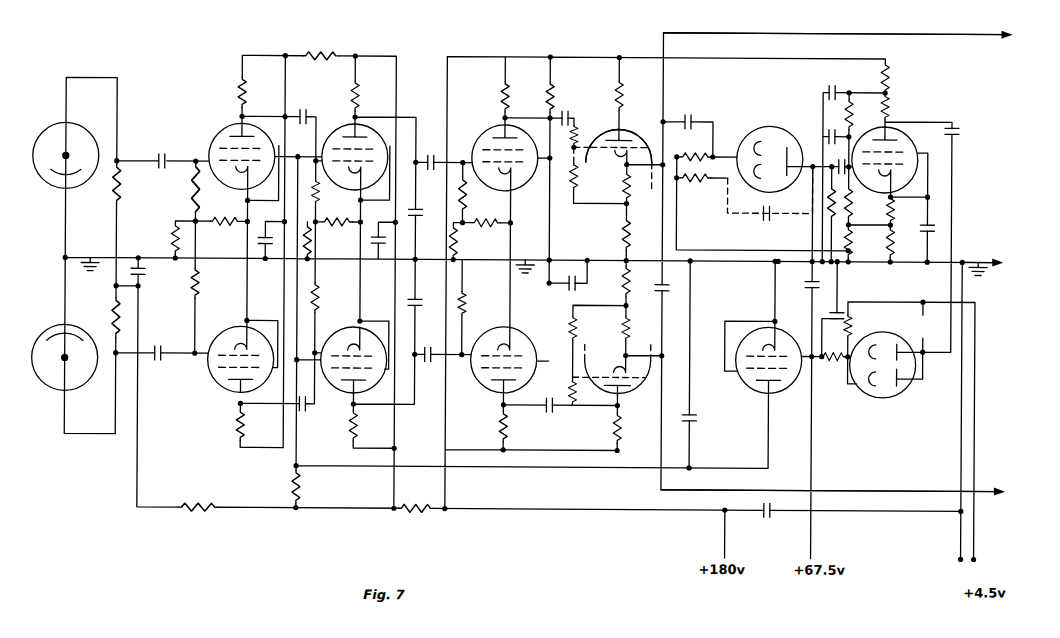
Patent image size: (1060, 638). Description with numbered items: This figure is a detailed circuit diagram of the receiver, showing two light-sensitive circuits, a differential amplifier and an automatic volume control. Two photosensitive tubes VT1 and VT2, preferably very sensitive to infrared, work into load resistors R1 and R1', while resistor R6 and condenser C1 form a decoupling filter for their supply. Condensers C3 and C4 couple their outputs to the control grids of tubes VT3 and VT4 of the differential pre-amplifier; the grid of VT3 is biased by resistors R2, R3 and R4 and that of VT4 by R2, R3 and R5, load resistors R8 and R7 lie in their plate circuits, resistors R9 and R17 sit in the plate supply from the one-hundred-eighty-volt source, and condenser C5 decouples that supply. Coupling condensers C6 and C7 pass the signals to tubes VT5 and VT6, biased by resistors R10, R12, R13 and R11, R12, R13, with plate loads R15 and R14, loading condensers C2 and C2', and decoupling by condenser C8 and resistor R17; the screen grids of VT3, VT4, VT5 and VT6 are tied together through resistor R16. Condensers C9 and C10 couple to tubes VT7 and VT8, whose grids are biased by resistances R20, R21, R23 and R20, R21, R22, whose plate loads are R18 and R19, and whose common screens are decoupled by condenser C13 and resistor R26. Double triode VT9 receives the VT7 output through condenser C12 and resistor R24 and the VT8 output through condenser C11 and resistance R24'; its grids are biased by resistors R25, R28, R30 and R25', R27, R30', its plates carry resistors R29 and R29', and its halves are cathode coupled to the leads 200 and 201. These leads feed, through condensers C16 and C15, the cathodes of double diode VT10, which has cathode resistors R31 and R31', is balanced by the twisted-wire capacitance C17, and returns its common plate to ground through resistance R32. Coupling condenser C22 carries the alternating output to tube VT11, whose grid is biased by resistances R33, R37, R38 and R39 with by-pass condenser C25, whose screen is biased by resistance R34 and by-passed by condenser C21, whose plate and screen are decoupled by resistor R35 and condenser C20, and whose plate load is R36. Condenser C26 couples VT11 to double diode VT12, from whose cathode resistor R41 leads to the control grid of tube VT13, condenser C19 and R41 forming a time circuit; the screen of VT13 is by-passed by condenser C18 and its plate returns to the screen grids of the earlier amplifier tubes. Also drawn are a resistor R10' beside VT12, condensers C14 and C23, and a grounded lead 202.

The photosensitive tube VT1 is at (66, 150).
The photosensitive tube VT2 is at (52, 352).
The differential pre-amplifier tube VT3 is at (242, 150).
The differential pre-amplifier tube VT4 is at (239, 353).
The amplifier tube VT5 is at (355, 151).
The amplifier tube VT6 is at (353, 353).
The amplifier tube VT7 is at (503, 153).
The amplifier tube VT8 is at (495, 366).
The double triode VT9 is at (619, 139).
The double diode VT10 is at (776, 155).
The amplifier tube VT11 is at (898, 159).
The double diode VT12 is at (889, 374).
The control tube VT13 is at (759, 365).
The load resistor R1 is at (127, 185).
The load resistor R1' is at (107, 318).
The biasing resistor R2 is at (225, 212).
The biasing resistor R3 is at (164, 239).
The biasing resistor R4 is at (182, 190).
The biasing resistor R5 is at (205, 283).
The decoupling filter resistor R6 is at (199, 498).
The load resistor R7 is at (250, 425).
The load resistor R8 is at (254, 92).
The plate supply resistor R9 is at (321, 48).
The biasing resistor R10 is at (330, 192).
The resistor R10' is at (863, 326).
The biasing resistor R11 is at (330, 298).
The biasing resistor R12 is at (324, 241).
The biasing resistor R13 is at (340, 214).
The load resistor R14 is at (367, 426).
The load resistor R15 is at (371, 96).
The screen grid resistor R16 is at (311, 487).
The decoupling resistor R17 is at (416, 499).
The load resistance R18 is at (519, 97).
The load resistance R19 is at (518, 427).
The biasing resistance R20 is at (439, 241).
The biasing resistance R21 is at (488, 230).
The biasing resistance R22 is at (477, 304).
The biasing resistance R23 is at (477, 195).
The coupling resistor R24 is at (587, 134).
The coupling resistance R24' is at (588, 392).
The biasing resistor R25 is at (587, 178).
The biasing resistor R25' is at (589, 328).
The screen decoupling resistor R26 is at (565, 97).
The biasing resistor R27 is at (642, 282).
The biasing resistor R28 is at (642, 235).
The plate resistor R29 is at (635, 95).
The plate resistor R29' is at (635, 428).
The biasing resistor R30 is at (643, 187).
The biasing resistor R30' is at (642, 329).
The cathode resistor R31 is at (696, 151).
The cathode resistor R31' is at (697, 185).
The plate return resistance R32 is at (840, 203).
The grid biasing resistance R33 is at (861, 203).
The screen biasing resistance R34 is at (862, 115).
The decoupling resistor R35 is at (901, 78).
The plate load resistor R36 is at (900, 109).
The grid biasing resistance R37 is at (905, 210).
The grid biasing resistance R38 is at (861, 243).
The grid biasing resistance R39 is at (905, 243).
The time circuit resistor R41 is at (834, 366).
The decoupling filter condenser C1 is at (146, 277).
The plate loading condenser C2 is at (423, 203).
The plate loading condenser C2' is at (424, 295).
The coupling condenser C3 is at (160, 153).
The coupling condenser C4 is at (159, 344).
The decoupling condenser C5 is at (262, 233).
The coupling condenser C6 is at (310, 107).
The coupling condenser C7 is at (313, 410).
The decoupling condenser C8 is at (373, 234).
The coupling condenser C9 is at (432, 154).
The coupling condenser C10 is at (432, 346).
The coupling condenser C11 is at (559, 412).
The coupling condenser C12 is at (580, 114).
The screen decoupling condenser C13 is at (574, 277).
The capacitor C14 is at (702, 412).
The coupling condenser C15 is at (673, 280).
The coupling condenser C16 is at (695, 114).
The balancing capacitance C17 is at (769, 221).
The screen by-pass condenser C18 is at (802, 278).
The smoothing condenser C19 is at (831, 307).
The decoupling condenser C20 is at (837, 87).
The screen by-pass condenser C21 is at (818, 134).
The coupling condenser C22 is at (851, 176).
The capacitor C23 is at (769, 503).
The by-passing condenser C25 is at (939, 236).
The coupling condenser C26 is at (963, 124).
The lead 200 is at (855, 43).
The lead 201 is at (850, 497).
The ground lead 202 is at (1000, 270).